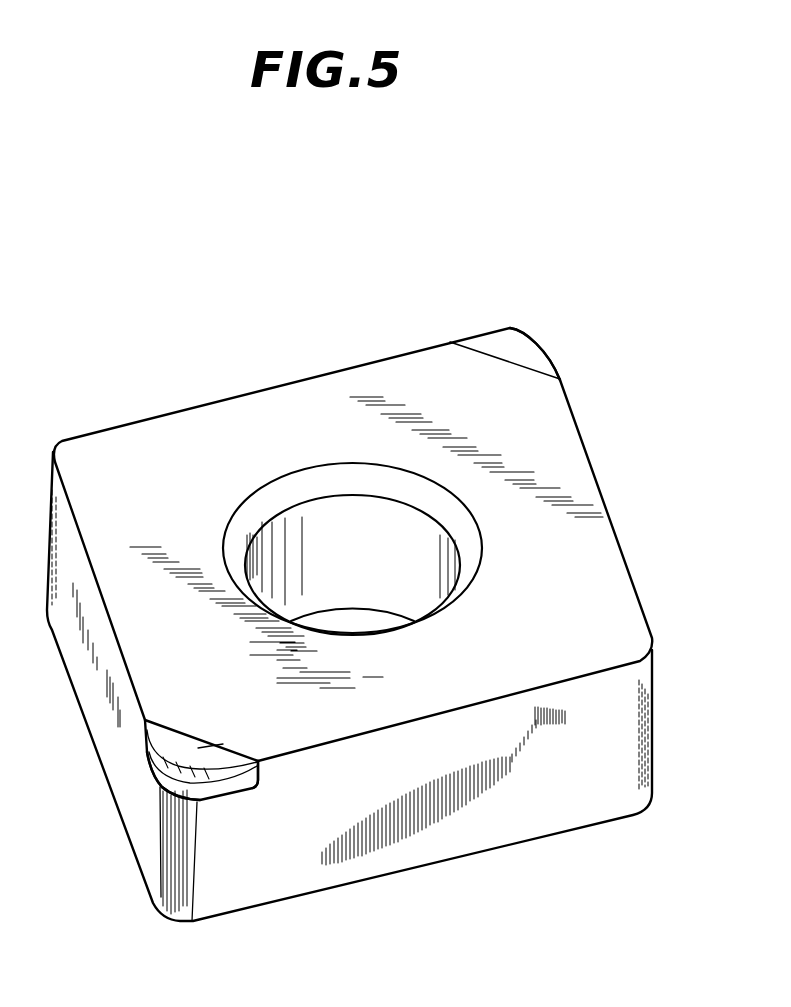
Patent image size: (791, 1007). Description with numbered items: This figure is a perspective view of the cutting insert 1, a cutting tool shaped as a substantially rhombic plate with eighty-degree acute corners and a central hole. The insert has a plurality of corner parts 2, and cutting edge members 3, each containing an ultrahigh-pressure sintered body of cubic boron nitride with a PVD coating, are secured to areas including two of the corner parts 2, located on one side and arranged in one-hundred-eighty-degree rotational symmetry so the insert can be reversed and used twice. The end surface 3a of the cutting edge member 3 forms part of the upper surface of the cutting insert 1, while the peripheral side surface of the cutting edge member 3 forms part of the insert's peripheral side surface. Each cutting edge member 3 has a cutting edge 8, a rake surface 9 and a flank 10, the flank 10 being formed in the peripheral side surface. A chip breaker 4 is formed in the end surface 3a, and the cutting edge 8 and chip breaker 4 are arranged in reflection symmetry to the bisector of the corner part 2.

The cutting insert 1 is at (210, 467).
The corner part 2 is at (523, 327).
The cutting edge member 3 is at (503, 343).
The end surface 3a is at (259, 765).
The chip breaker 4 is at (155, 784).
The cutting edge 8 is at (157, 790).
The rake surface 9 is at (153, 763).
The flank 10 is at (195, 793).